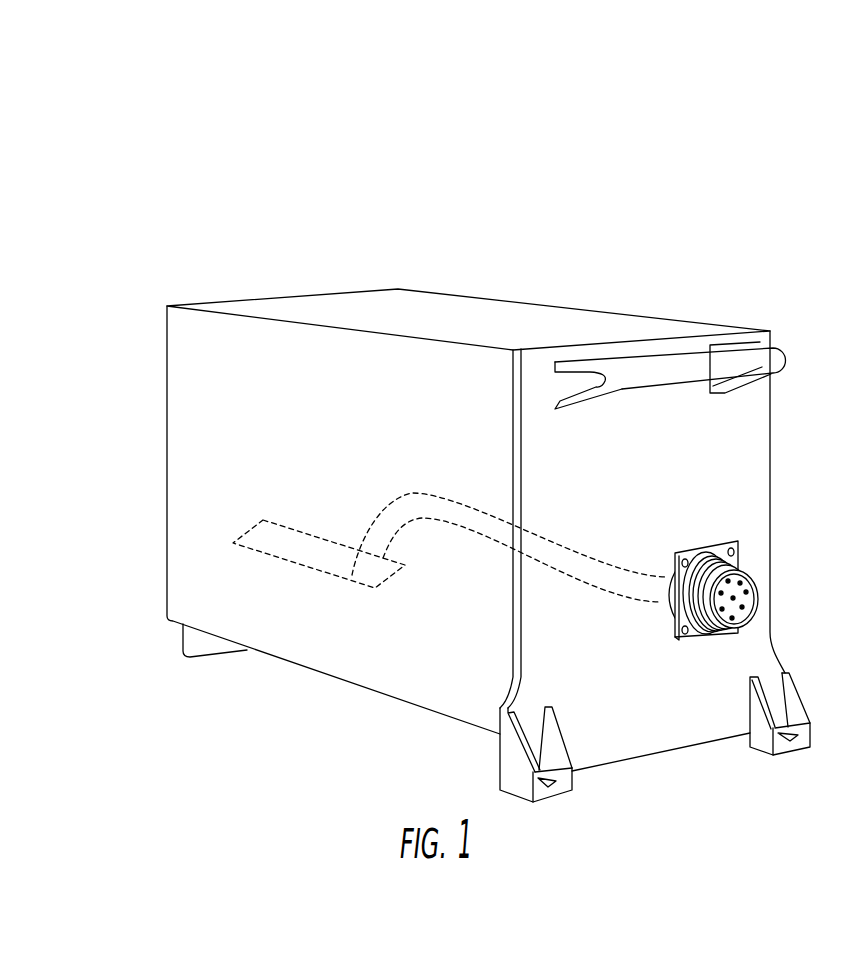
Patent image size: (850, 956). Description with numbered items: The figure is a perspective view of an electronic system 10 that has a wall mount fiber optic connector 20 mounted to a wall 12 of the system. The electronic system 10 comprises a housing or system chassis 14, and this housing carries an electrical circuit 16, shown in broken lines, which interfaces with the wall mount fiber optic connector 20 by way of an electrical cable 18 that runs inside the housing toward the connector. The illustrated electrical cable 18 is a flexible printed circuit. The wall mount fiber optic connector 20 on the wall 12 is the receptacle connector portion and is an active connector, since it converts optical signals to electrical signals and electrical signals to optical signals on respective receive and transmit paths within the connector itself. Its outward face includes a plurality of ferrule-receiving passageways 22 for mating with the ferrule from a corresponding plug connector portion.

The electronic system 10 is at (524, 222).
The wall 12 is at (669, 481).
The housing or system chassis 14 is at (165, 348).
The electrical circuit 16 is at (273, 542).
The electrical cable 18 is at (570, 568).
The wall mount fiber optic connector 20 is at (707, 547).
The ferrule-receiving passageways 22 is at (844, 528).